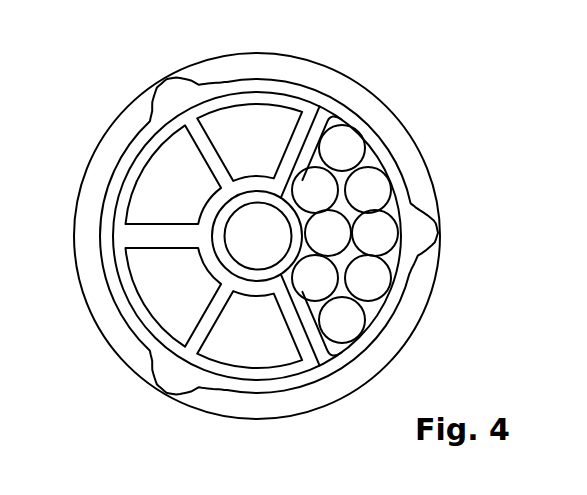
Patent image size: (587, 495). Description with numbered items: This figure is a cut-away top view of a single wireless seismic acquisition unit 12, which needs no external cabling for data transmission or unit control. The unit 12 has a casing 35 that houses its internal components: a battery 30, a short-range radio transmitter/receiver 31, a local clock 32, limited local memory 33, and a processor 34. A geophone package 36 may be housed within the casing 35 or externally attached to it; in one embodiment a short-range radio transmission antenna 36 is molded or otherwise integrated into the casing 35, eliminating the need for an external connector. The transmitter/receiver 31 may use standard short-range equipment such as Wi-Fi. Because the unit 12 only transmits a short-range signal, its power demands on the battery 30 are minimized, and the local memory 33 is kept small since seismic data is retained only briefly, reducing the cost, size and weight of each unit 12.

The seismic acquisition unit 12 is at (405, 98).
The battery 30 is at (382, 232).
The short-range radio transmitter/receiver 31 is at (245, 350).
The local clock 32 is at (162, 300).
The local memory 33 is at (162, 175).
The processor 34 is at (245, 118).
The casing 35 is at (432, 318).
The geophone package 36 is at (267, 238).